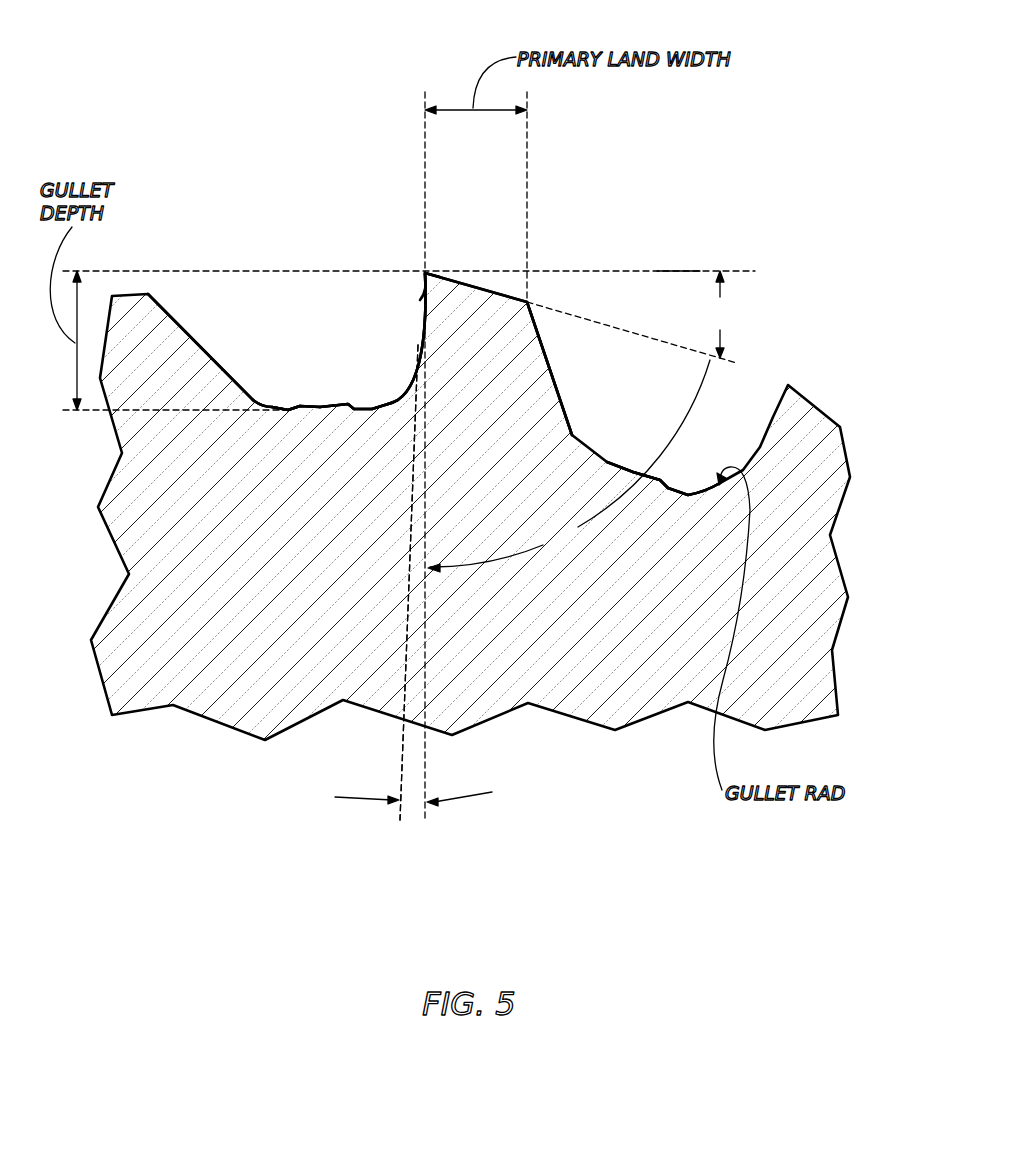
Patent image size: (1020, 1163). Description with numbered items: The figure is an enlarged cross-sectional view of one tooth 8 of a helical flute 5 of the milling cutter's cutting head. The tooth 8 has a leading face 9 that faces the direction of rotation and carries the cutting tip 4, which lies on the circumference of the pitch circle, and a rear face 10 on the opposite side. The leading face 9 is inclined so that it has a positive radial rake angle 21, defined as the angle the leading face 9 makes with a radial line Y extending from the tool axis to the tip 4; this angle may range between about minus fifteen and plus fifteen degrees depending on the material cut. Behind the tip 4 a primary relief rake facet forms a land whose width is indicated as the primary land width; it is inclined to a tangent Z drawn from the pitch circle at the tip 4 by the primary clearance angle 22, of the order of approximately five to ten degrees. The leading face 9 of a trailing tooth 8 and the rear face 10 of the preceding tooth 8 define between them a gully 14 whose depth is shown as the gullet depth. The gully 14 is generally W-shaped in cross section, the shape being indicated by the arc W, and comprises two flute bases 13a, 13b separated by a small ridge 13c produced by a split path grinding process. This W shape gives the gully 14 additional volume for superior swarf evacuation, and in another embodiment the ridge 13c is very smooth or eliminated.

The cutting tip 4 is at (425, 272).
The helical flute 5 is at (287, 293).
The tooth 8 is at (469, 361).
The leading face 9 is at (425, 340).
The rear face 10 is at (207, 354).
The gully 14 is at (297, 326).
The flute base 13a is at (288, 408).
The flute base 13b is at (390, 404).
The small ridge 13c is at (349, 404).
The radial rake angle 21 is at (363, 803).
The primary clearance angle 22 is at (777, 314).
The W-shaped cross section W is at (569, 466).
The radial line Y is at (402, 763).
The tangent Z is at (657, 271).